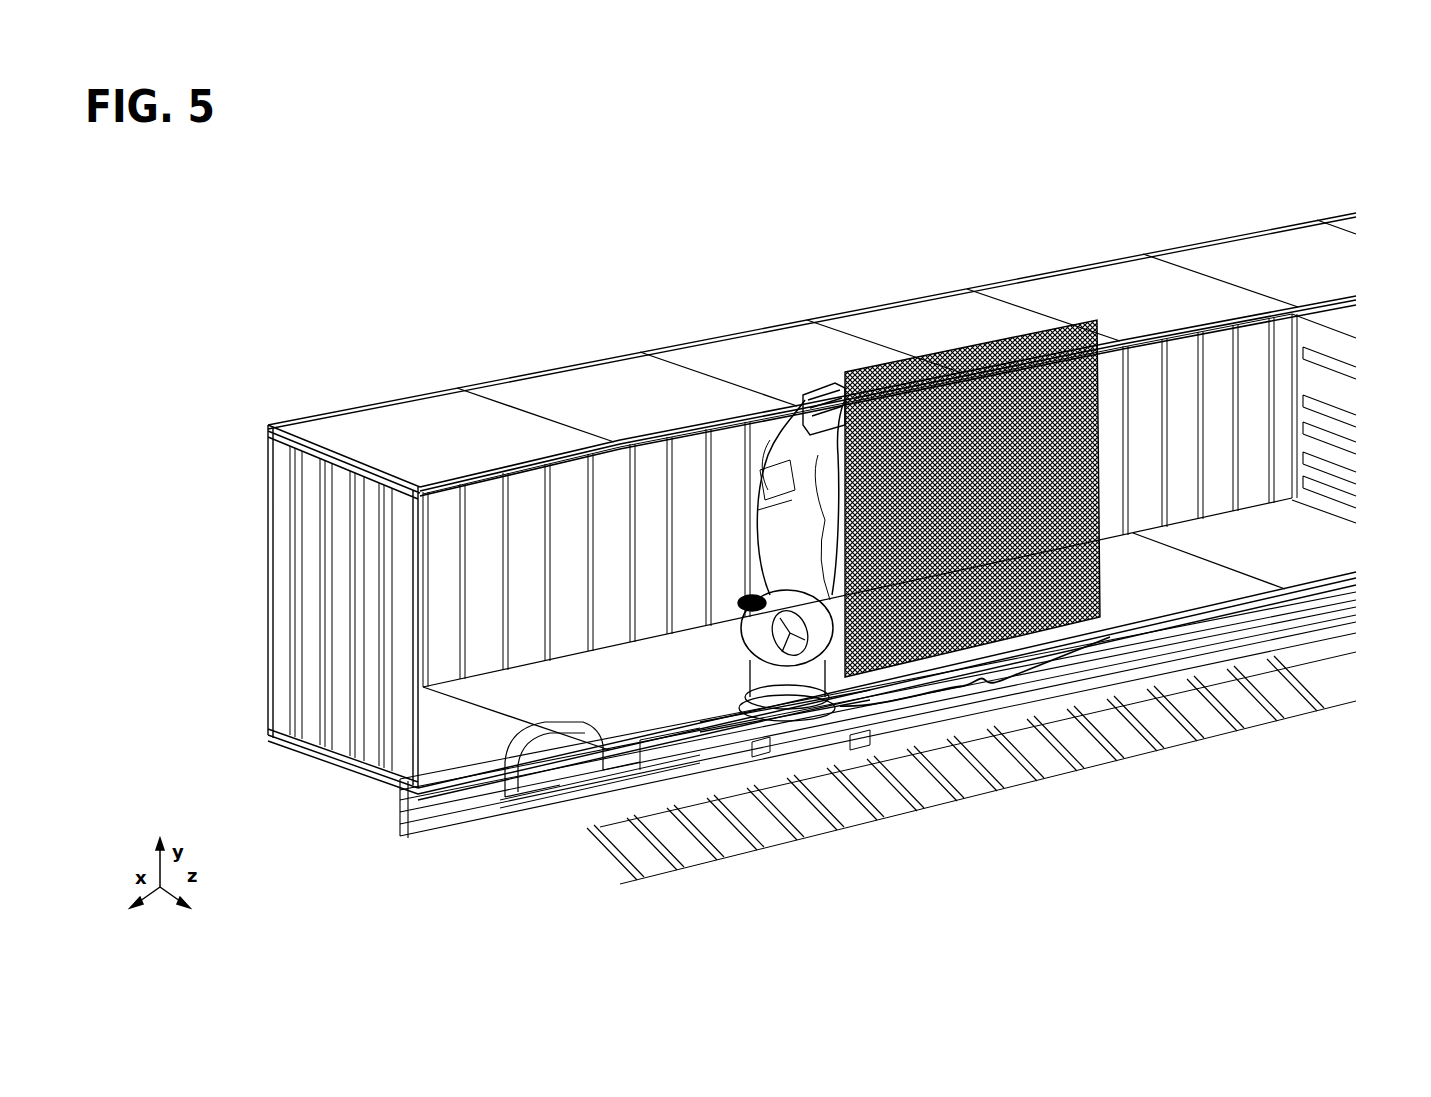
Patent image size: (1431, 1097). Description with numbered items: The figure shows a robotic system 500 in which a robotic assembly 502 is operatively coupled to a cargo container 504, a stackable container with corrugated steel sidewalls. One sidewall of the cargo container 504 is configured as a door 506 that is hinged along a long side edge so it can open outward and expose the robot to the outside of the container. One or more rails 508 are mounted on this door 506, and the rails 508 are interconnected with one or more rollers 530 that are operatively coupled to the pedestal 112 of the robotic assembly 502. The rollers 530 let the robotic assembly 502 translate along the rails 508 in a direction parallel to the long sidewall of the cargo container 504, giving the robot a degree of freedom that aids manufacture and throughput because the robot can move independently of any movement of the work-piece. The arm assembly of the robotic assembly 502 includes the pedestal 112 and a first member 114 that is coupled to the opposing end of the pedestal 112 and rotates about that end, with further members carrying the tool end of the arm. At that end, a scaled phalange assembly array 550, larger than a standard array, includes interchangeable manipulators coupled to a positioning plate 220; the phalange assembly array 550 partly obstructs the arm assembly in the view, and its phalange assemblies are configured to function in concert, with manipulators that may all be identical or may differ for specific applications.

The robotic system 500 is at (284, 260).
The cargo container 504 is at (268, 500).
The rails 508 is at (1335, 625).
The door 506 is at (1233, 733).
The robotic assembly 502 is at (716, 740).
The positioning plate 220 is at (853, 648).
The pedestal 112 is at (745, 662).
The first member 114 is at (783, 562).
The rollers 530 is at (760, 748).
The phalange assembly array 550 is at (980, 688).